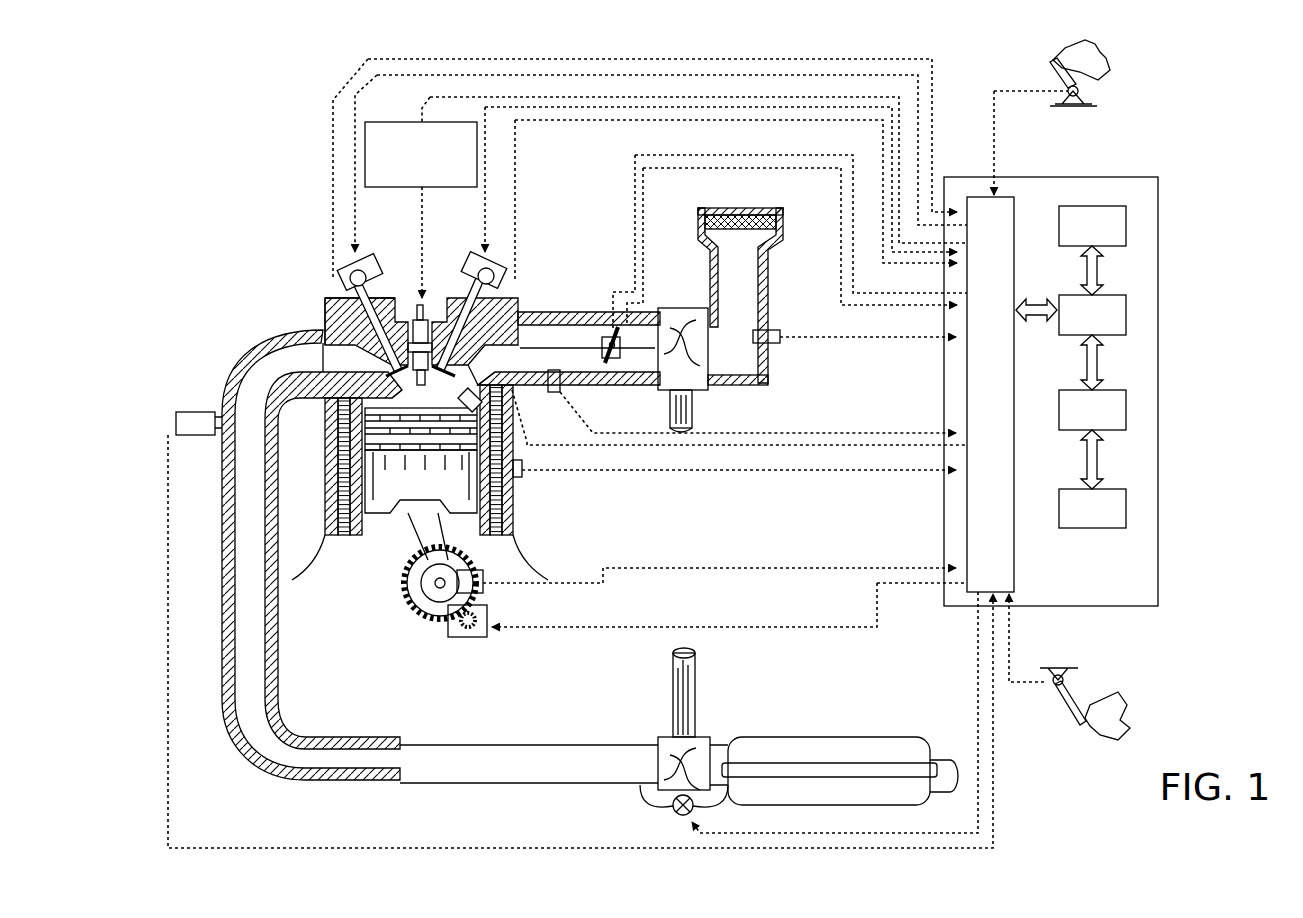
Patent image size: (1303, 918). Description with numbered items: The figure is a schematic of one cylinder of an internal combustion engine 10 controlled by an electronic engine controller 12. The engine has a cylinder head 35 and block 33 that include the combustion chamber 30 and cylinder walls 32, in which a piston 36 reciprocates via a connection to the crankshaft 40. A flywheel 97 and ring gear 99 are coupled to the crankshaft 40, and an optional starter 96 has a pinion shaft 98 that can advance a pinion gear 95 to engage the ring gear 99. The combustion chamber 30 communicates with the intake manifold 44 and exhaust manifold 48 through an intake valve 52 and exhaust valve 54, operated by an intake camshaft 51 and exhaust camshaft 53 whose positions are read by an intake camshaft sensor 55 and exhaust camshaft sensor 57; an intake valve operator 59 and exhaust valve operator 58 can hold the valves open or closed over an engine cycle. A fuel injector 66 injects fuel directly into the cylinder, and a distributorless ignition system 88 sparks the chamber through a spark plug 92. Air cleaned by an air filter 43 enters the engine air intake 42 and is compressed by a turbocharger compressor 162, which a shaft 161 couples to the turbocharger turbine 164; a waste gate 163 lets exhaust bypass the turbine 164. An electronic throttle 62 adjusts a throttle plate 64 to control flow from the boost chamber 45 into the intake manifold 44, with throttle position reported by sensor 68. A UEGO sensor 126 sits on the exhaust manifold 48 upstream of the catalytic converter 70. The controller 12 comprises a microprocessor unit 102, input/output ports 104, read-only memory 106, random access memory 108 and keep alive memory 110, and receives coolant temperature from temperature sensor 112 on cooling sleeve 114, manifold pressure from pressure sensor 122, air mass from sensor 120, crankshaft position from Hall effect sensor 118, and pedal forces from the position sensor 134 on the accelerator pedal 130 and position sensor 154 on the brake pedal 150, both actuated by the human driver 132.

The internal combustion engine 10 is at (266, 256).
The electronic engine controller 12 is at (1158, 180).
The combustion chamber 30 is at (417, 392).
The cylinder walls 32 is at (363, 515).
The block 33 is at (321, 437).
The cylinder head 35 is at (320, 295).
The piston 36 is at (403, 485).
The crankshaft 40 is at (420, 603).
The engine air intake 42 is at (787, 216).
The air filter 43 is at (760, 224).
The intake manifold 44 is at (519, 362).
The boost chamber 45 is at (629, 360).
The exhaust manifold 48 is at (281, 368).
The intake camshaft 51 is at (478, 256).
The intake valve 52 is at (456, 345).
The exhaust camshaft 53 is at (364, 257).
The exhaust valve 54 is at (382, 356).
The intake camshaft sensor 55 is at (493, 272).
The exhaust camshaft sensor 57 is at (345, 268).
The exhaust valve operator 58 is at (368, 284).
The intake valve operator 59 is at (476, 285).
The electronic throttle 62 is at (602, 342).
The throttle plate 64 is at (604, 360).
The fuel injector 66 is at (458, 399).
The throttle position sensor 68 is at (625, 332).
The catalytic converter 70 is at (765, 737).
The distributorless ignition system 88 is at (380, 122).
The spark plug 92 is at (420, 300).
The pinion gear 95 is at (468, 632).
The starter 96 is at (487, 637).
The flywheel 97 is at (402, 591).
The pinion shaft 98 is at (460, 628).
The ring gear 99 is at (430, 617).
The microprocessor unit 102 is at (1126, 312).
The input/output ports 104 is at (1014, 202).
The read-only memory 106 is at (1126, 222).
The random access memory 108 is at (1126, 412).
The keep alive memory 110 is at (1126, 510).
The temperature sensor 112 is at (522, 471).
The cooling sleeve 114 is at (504, 496).
The Hall effect sensor 118 is at (483, 576).
The air mass sensor 120 is at (780, 332).
The pressure sensor 122 is at (556, 394).
The Universal Exhaust Gas Oxygen sensor 126 is at (176, 418).
The accelerator pedal 130 is at (1058, 72).
The human driver 132 is at (1100, 68).
The position sensor 134 is at (1094, 103).
The brake pedal 150 is at (1080, 726).
The position sensor 154 is at (1045, 671).
The shaft 161 is at (694, 410).
The turbocharger compressor 162 is at (700, 378).
The waste gate 163 is at (675, 812).
The turbocharger turbine 164 is at (667, 737).